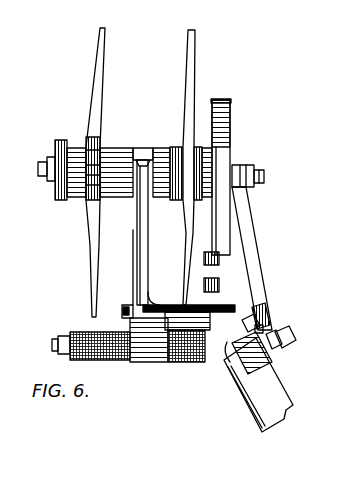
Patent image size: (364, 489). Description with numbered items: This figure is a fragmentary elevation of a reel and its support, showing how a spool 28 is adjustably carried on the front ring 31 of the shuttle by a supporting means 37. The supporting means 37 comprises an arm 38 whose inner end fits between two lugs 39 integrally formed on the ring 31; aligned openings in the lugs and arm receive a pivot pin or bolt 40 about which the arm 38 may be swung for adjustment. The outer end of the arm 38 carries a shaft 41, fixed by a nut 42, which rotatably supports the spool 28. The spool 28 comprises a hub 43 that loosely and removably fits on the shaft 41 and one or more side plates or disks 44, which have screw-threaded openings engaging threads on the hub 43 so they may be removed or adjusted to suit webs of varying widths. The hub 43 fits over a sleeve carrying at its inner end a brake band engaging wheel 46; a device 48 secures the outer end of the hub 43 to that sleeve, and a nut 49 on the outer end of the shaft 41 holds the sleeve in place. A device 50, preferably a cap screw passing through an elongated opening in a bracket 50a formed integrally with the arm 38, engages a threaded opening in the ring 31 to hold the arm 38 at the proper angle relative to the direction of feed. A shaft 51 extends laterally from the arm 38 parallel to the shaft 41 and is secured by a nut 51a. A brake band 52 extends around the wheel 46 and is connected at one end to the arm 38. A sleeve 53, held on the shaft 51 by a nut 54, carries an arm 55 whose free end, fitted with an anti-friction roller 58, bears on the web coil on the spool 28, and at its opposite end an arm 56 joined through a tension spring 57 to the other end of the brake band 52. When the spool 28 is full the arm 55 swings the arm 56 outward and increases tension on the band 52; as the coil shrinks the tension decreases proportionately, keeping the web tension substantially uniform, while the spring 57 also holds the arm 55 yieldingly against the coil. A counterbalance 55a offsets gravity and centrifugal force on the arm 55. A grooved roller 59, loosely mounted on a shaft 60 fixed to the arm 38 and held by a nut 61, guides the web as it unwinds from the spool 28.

The spool 28 is at (140, 291).
The ring 31 is at (283, 401).
The supporting means 37 is at (286, 309).
The arm 38 is at (240, 230).
The lug 39 is at (212, 368).
The pivot pin or bolt 40 is at (256, 327).
The shaft 41 is at (264, 178).
The nut 42 is at (254, 167).
The hub 43 is at (173, 148).
The side plates or disks 44 is at (102, 53).
The brake band engaging wheel 46 is at (230, 128).
The securing device 48 is at (62, 140).
The nut 49 is at (47, 160).
The securing device 50 is at (288, 345).
The bracket 50a is at (280, 329).
The shaft 51 is at (123, 310).
The nut 51a is at (259, 328).
The brake band 52 is at (222, 100).
The sleeve 53 is at (202, 350).
The nut 54 is at (125, 307).
The arm 55 is at (138, 250).
The counterbalance 55a is at (153, 355).
The arm 56 is at (238, 303).
The tension spring 57 is at (228, 270).
The anti-friction roller 58 is at (143, 148).
The roller 59 is at (77, 355).
The shaft 60 is at (52, 344).
The nut 61 is at (66, 335).